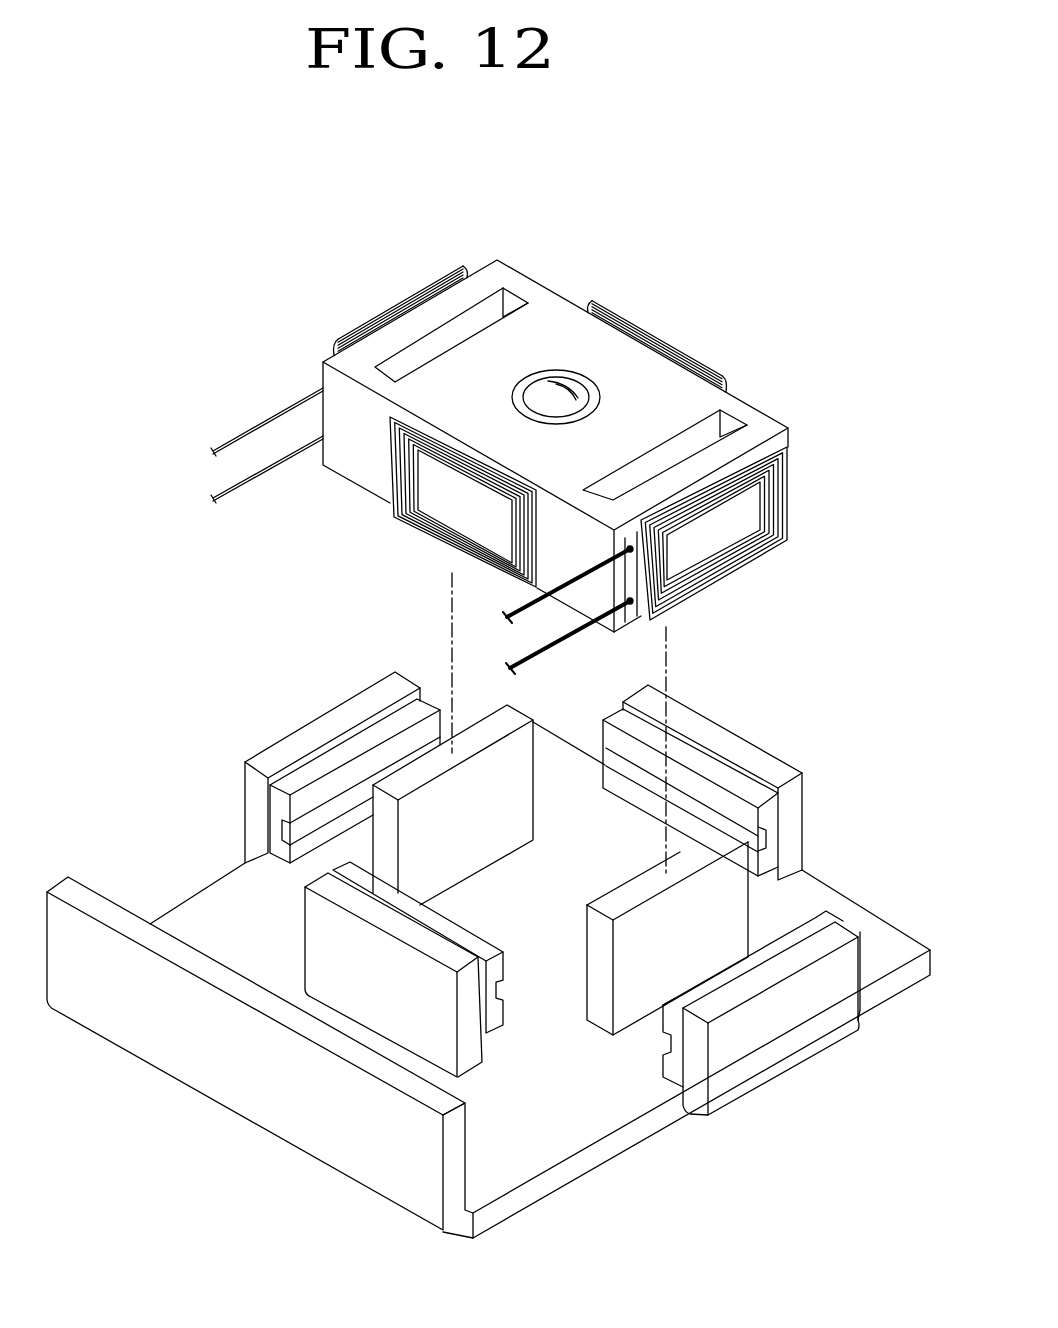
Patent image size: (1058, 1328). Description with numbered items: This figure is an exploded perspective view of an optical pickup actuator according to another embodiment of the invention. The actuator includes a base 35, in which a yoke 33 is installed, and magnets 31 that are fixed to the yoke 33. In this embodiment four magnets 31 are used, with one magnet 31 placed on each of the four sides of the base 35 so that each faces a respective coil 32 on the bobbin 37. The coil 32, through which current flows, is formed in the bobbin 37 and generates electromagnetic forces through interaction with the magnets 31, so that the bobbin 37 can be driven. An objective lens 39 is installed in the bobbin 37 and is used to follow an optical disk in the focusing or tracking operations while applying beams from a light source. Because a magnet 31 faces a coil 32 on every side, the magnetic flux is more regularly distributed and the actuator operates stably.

The magnet 31 is at (325, 760).
The coil 32 is at (392, 521).
The yoke 33 is at (773, 767).
The base 35 is at (835, 905).
The bobbin 37 is at (551, 302).
The objective lens 39 is at (575, 378).